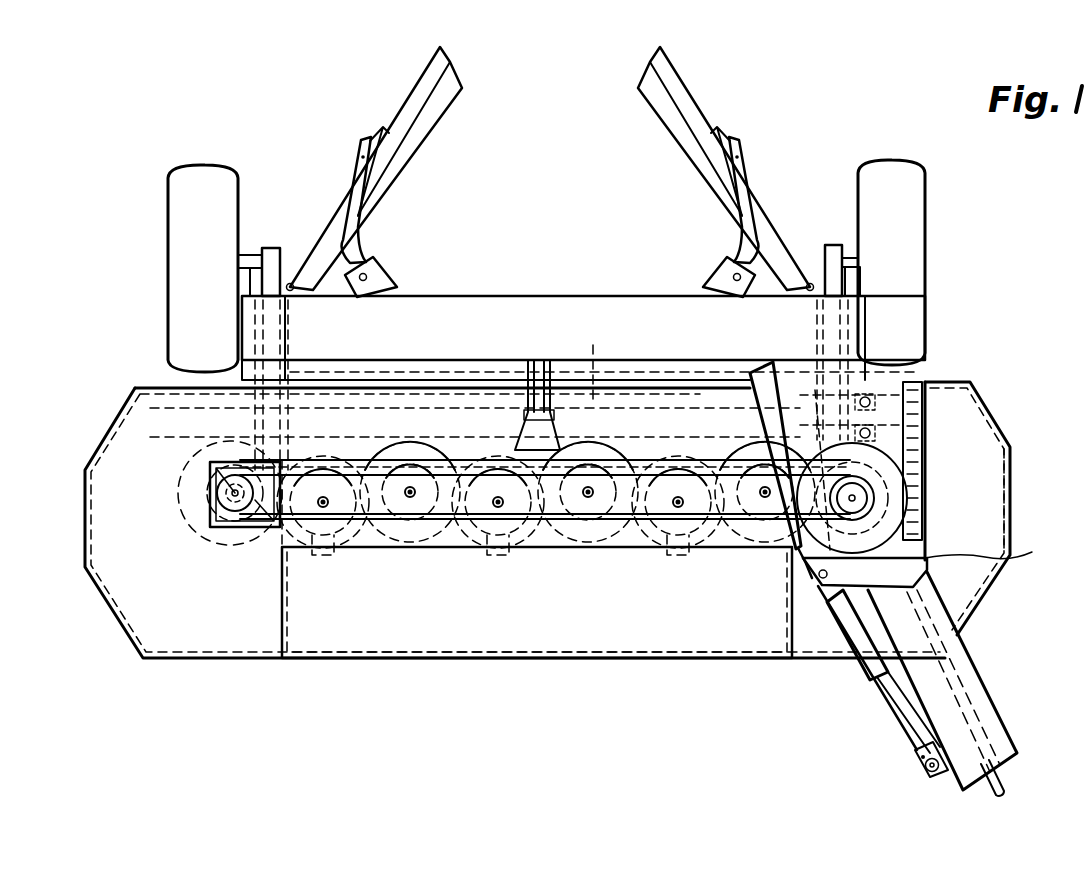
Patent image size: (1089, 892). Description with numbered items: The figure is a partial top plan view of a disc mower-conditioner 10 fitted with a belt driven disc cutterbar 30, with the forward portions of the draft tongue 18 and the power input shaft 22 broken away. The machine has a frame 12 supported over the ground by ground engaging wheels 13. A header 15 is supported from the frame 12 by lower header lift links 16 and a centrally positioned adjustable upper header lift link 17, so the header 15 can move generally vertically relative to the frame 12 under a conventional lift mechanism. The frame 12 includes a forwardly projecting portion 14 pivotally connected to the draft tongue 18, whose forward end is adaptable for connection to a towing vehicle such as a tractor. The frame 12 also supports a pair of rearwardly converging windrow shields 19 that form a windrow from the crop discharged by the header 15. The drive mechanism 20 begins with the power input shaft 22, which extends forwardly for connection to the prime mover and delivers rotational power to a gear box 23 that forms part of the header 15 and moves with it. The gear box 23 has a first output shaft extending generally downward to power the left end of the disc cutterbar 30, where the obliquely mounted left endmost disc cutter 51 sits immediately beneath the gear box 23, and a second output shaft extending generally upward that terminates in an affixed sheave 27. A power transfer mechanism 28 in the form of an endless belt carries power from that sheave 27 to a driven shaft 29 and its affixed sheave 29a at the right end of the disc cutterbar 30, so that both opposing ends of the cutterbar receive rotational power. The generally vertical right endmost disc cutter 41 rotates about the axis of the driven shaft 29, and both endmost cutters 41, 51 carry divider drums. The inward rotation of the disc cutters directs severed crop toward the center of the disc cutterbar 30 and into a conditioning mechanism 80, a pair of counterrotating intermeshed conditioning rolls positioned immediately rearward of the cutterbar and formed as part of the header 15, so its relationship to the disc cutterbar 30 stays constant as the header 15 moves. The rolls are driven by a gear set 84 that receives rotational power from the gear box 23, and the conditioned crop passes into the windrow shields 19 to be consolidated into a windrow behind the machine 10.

The disc mower-conditioner 10 is at (118, 92).
The frame 12 is at (545, 312).
The ground engaging wheels 13 is at (185, 200).
The forwardly projecting portion 14 is at (994, 548).
The header 15 is at (346, 686).
The lower header lift links 16 is at (258, 402).
The adjustable upper header lift link 17 is at (531, 395).
The draft tongue 18 is at (983, 705).
The windrow shields 19 is at (447, 98).
The drive mechanism 20 is at (958, 411).
The power input shaft 22 is at (1006, 784).
The gear box 23 is at (792, 596).
The sheave 27 is at (797, 560).
The power transfer mechanism 28 is at (637, 547).
The driven shaft 29 is at (197, 497).
The sheave 29a is at (210, 468).
The disc cutterbar 30 is at (443, 567).
The right endmost disc cutter 41 is at (215, 544).
The left endmost disc cutter 51 is at (1010, 446).
The conditioning mechanism 80 is at (593, 345).
The gear set 84 is at (912, 378).